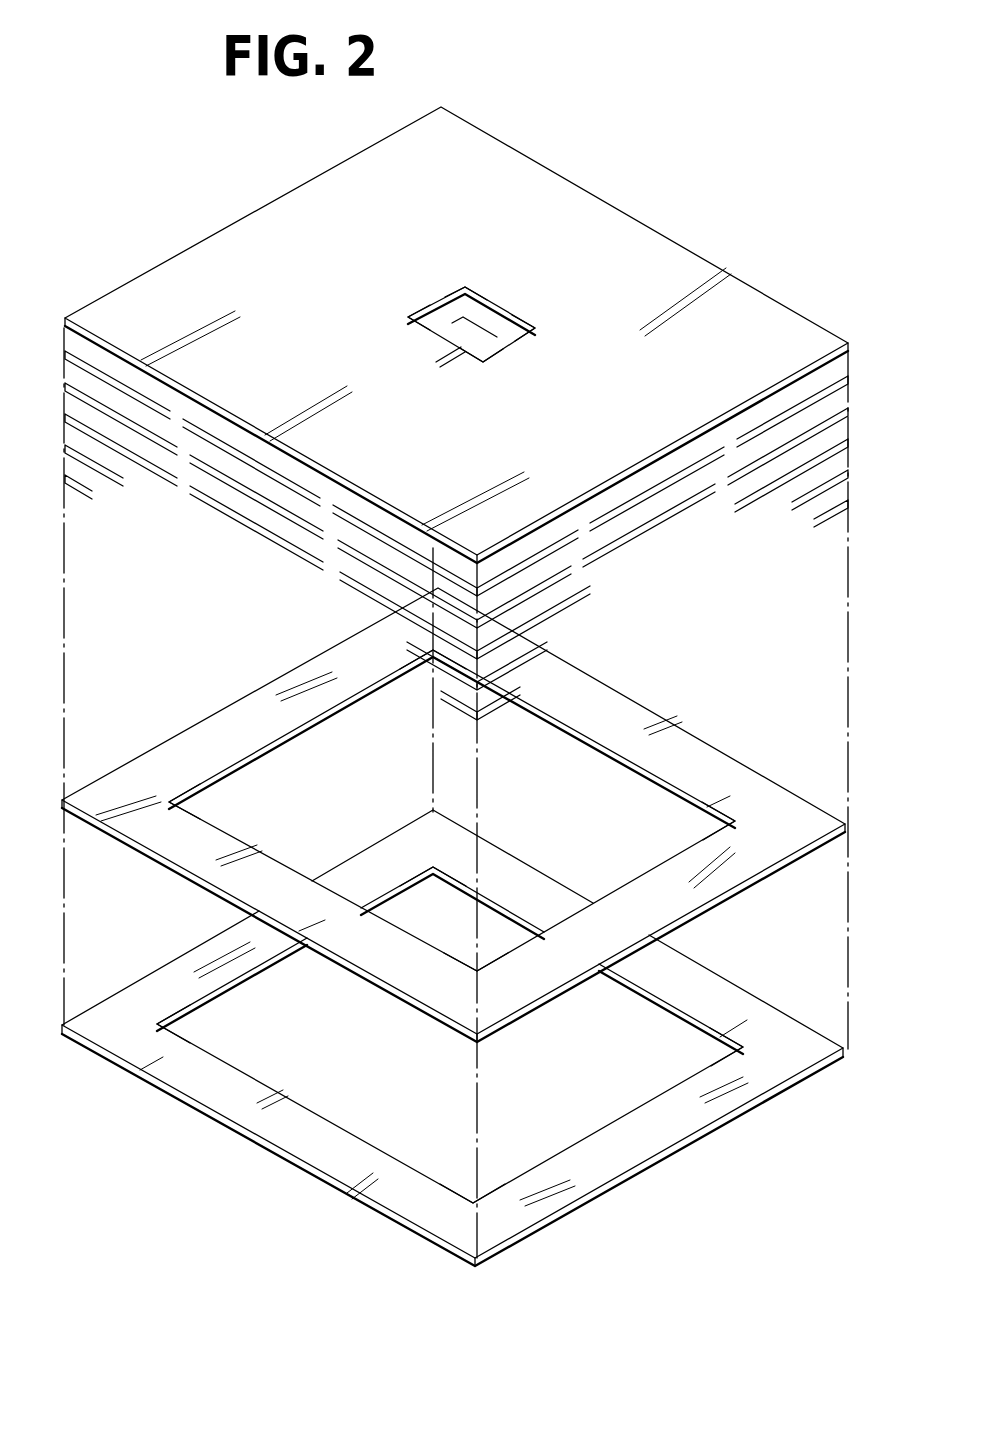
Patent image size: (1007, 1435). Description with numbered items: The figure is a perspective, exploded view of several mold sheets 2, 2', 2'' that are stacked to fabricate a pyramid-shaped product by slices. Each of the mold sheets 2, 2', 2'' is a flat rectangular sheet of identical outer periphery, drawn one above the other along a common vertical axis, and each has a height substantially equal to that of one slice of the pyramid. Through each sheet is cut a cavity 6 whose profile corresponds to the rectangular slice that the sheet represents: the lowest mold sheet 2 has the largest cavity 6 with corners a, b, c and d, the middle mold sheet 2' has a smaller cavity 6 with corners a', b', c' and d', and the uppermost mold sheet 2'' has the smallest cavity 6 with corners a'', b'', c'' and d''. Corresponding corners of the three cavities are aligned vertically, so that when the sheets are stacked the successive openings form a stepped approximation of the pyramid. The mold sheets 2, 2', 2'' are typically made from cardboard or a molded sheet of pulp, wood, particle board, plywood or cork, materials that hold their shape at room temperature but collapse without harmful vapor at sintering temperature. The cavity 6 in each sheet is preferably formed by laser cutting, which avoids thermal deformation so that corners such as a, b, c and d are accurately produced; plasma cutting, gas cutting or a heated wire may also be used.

The mold sheet 2 is at (452, 1038).
The mold sheet 2' is at (453, 815).
The mold sheet 2'' is at (456, 335).
The cavity 6 is at (452, 313).
The corner a is at (155, 979).
The corner b is at (439, 1237).
The corner c is at (759, 1083).
The corner d is at (408, 833).
The corner a' is at (168, 744).
The corner b' is at (522, 1000).
The corner c' is at (760, 775).
The corner d' is at (367, 632).
The corner a'' is at (379, 311).
The corner b'' is at (492, 388).
The corner c'' is at (565, 345).
The corner d'' is at (482, 260).